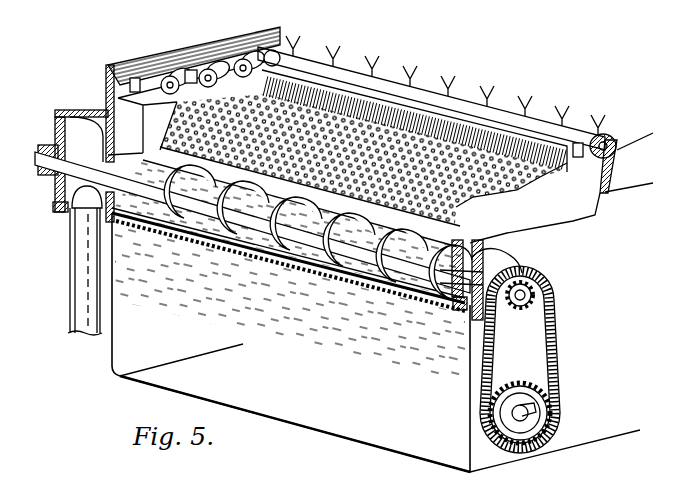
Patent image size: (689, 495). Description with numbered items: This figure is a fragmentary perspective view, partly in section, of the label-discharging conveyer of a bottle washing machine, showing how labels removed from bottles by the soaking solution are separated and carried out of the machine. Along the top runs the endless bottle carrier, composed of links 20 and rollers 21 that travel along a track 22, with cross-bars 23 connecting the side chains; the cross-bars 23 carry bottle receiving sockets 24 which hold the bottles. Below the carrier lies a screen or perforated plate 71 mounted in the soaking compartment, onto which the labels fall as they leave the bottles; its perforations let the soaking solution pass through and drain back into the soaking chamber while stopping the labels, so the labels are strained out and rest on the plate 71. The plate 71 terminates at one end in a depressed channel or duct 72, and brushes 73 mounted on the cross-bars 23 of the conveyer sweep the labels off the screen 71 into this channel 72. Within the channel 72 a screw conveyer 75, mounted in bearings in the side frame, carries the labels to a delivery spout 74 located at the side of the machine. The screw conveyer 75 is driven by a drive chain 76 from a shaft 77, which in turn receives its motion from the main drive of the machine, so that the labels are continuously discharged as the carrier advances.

The links 20 is at (187, 75).
The rollers 21 is at (201, 70).
The track 22 is at (107, 103).
The cross-bars 23 is at (576, 142).
The bottle receiving sockets 24 is at (430, 83).
The screen or perforated plate 71 is at (512, 186).
The depressed channel or duct 72 is at (428, 300).
The brushes 73 is at (497, 140).
The delivery spout 74 is at (68, 265).
The screw conveyer 75 is at (343, 275).
The drive chain 76 is at (548, 352).
The shaft 77 is at (532, 417).